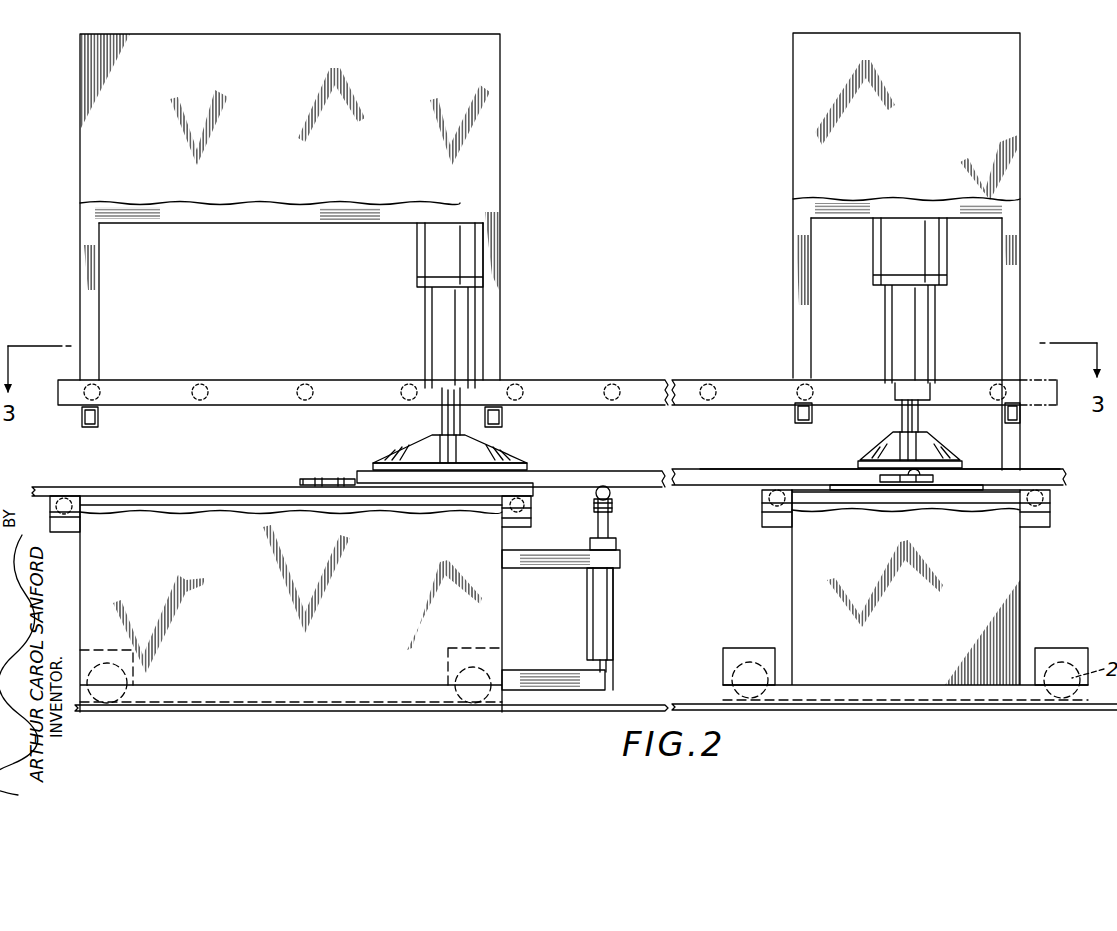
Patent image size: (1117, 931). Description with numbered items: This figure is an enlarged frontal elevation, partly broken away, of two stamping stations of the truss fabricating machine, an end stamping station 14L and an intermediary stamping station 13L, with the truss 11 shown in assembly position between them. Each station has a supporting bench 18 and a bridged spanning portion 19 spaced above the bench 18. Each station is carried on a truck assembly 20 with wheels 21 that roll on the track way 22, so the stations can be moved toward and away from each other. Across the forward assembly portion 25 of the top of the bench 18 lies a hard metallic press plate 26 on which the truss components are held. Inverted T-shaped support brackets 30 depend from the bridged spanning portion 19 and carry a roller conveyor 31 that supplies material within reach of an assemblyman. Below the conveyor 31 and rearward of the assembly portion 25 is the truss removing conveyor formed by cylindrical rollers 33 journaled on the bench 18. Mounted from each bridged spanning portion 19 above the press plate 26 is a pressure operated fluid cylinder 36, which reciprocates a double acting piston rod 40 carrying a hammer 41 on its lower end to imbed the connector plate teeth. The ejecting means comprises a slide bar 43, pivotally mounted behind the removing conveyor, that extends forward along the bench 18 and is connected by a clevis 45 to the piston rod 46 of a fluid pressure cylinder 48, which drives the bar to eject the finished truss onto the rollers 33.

The truss 11 is at (712, 467).
The intermediary stamping station 13L is at (1040, 560).
The end stamping station 14L is at (530, 323).
The supporting bench 18 is at (93, 563).
The bridged spanning portion 19 is at (286, 222).
The truck assembly 20 is at (1060, 648).
The wheels 21 is at (745, 672).
The track way 22 is at (705, 703).
The assembly portion 25 is at (226, 486).
The press plate 26 is at (271, 487).
The support brackets 30 is at (80, 283).
The roller conveyor 31 is at (641, 379).
The cylindrical rollers 33 is at (64, 495).
The pressure operated fluid cylinder 36 is at (425, 306).
The double acting piston rod 40 is at (442, 416).
The hammer 41 is at (400, 456).
The slide bar 43 is at (604, 486).
The clevis 45 is at (613, 506).
The piston rod 46 is at (608, 531).
The fluid pressure cylinder 48 is at (608, 610).